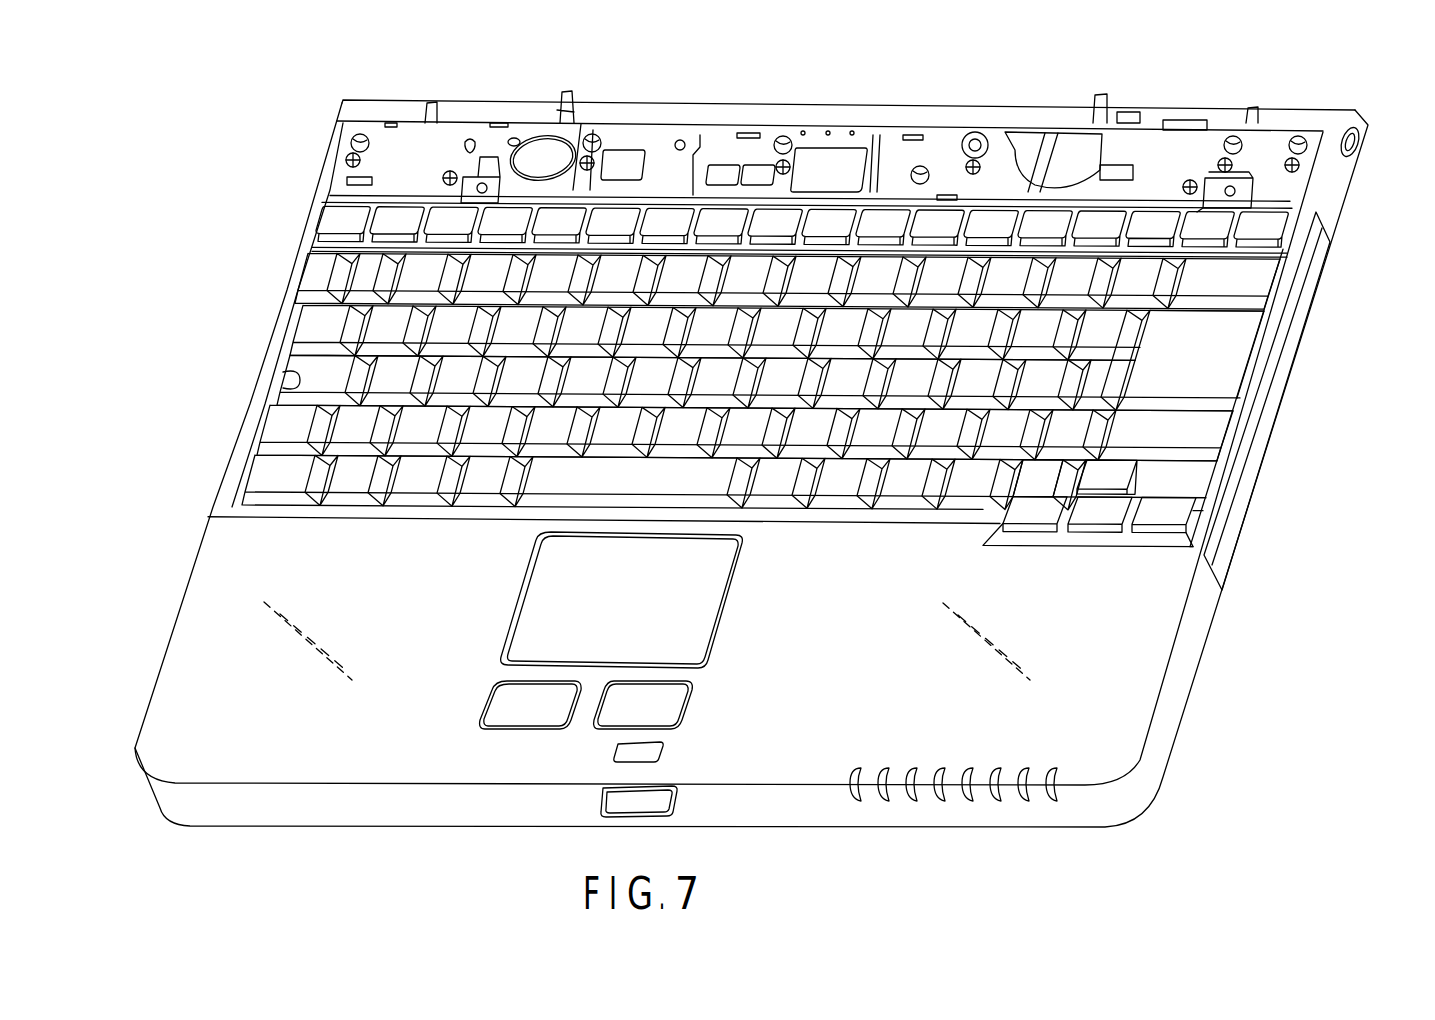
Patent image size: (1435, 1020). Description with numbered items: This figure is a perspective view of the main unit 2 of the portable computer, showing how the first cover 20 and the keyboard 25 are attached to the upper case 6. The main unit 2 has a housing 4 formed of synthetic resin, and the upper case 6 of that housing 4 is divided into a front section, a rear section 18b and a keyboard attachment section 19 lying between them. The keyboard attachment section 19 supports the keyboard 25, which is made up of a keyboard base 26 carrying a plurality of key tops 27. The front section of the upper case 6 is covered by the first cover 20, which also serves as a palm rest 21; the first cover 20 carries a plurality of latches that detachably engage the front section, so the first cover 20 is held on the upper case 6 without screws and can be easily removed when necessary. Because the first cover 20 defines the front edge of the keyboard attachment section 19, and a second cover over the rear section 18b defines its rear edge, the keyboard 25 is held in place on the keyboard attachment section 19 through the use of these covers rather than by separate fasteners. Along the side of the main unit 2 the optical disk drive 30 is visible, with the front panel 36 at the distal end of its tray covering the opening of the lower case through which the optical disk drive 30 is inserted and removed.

The main unit 2 is at (1380, 117).
The housing 4 is at (1001, 100).
The rear section 18b is at (380, 156).
The keyboard attachment section 19 is at (290, 377).
The key tops 27 is at (547, 430).
The keyboard 25 is at (1195, 364).
The keyboard base 26 is at (1043, 484).
The front panel 36 is at (1330, 285).
The upper case 6 is at (1255, 412).
The optical disk drive 30 is at (1262, 528).
The palm rest 21 is at (1120, 667).
The first cover 20 is at (778, 735).